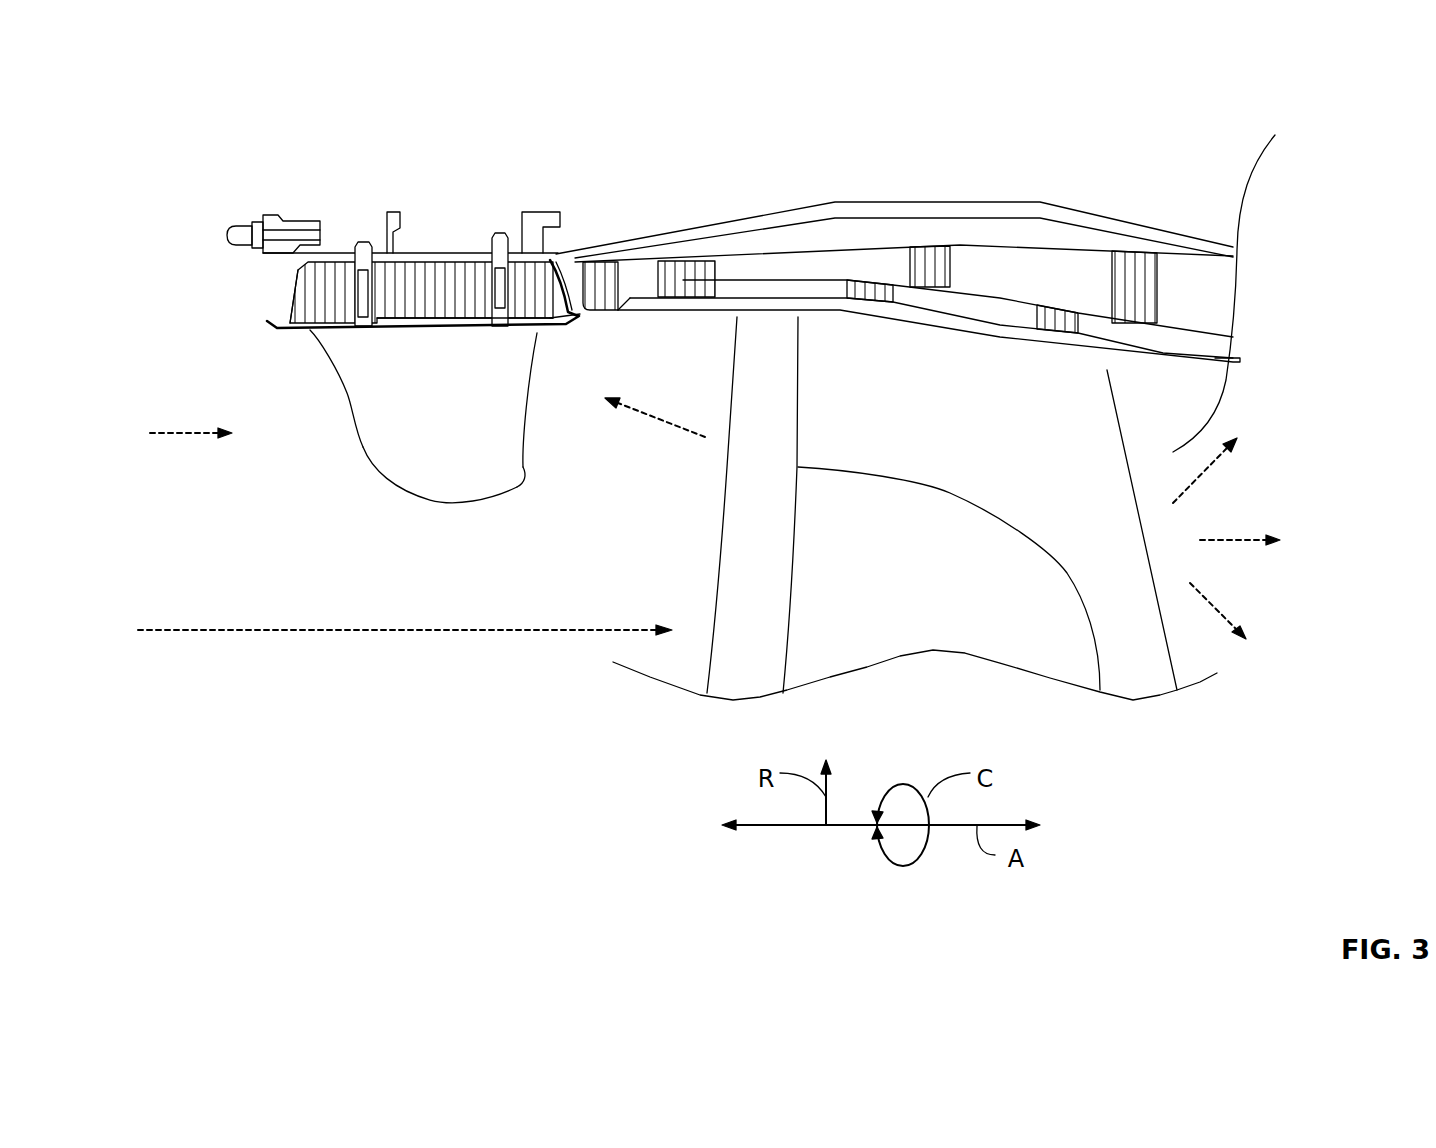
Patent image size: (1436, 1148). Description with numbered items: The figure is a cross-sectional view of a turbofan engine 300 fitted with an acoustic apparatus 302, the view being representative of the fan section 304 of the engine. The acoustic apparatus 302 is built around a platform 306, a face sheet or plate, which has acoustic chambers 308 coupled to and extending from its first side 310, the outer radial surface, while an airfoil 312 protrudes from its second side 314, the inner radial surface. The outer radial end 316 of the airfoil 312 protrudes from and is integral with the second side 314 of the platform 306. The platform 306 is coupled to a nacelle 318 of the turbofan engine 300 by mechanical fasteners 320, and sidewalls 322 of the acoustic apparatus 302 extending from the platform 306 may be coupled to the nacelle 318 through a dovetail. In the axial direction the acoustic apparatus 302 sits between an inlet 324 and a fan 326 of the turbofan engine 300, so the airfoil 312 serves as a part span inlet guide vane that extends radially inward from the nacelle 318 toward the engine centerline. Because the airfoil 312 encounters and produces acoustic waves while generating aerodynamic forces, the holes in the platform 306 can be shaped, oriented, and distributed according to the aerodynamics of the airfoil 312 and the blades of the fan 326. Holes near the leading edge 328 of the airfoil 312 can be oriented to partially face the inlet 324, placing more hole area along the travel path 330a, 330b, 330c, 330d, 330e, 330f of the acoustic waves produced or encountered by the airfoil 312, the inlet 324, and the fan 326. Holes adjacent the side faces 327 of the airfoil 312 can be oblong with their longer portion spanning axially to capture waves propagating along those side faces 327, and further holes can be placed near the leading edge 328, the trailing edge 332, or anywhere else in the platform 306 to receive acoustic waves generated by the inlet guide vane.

The turbofan engine 300 is at (1163, 68).
The acoustic apparatus 302 is at (449, 436).
The fan section 304 is at (915, 508).
The platform 306 is at (580, 323).
The acoustic chambers 308 is at (320, 272).
The first side 310 is at (452, 318).
The airfoil 312 is at (500, 502).
The second side 314 is at (282, 328).
The outer radial end 316 is at (436, 325).
The nacelle 318 is at (888, 203).
The mechanical fasteners 320 is at (365, 260).
The sidewalls 322 is at (570, 248).
The inlet 324 is at (200, 504).
The fan 326 is at (728, 530).
The side faces 327 is at (497, 437).
The leading edge 328 is at (350, 400).
The travel path 330a is at (157, 433).
The travel path 330b is at (497, 630).
The travel path 330c is at (630, 402).
The travel path 330d is at (1208, 540).
The travel path 330e is at (1190, 482).
The travel path 330f is at (1220, 610).
The trailing edge 332 is at (525, 477).